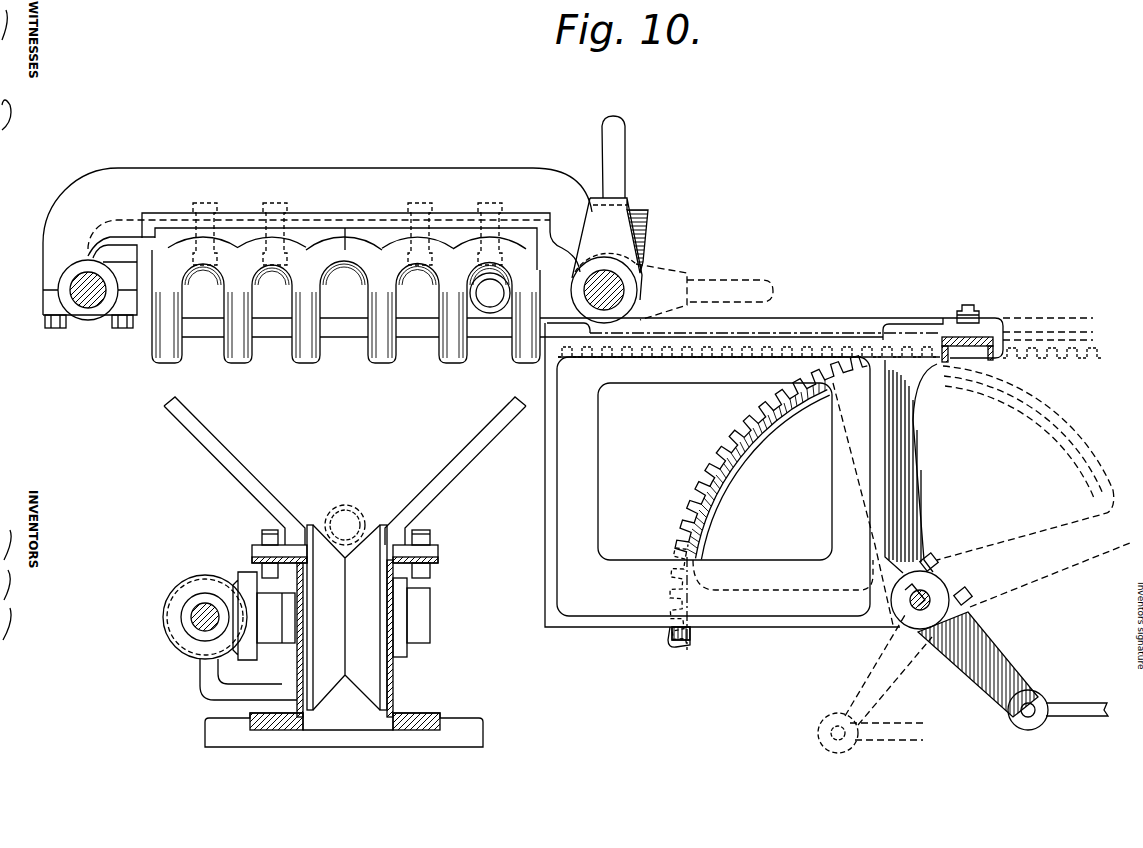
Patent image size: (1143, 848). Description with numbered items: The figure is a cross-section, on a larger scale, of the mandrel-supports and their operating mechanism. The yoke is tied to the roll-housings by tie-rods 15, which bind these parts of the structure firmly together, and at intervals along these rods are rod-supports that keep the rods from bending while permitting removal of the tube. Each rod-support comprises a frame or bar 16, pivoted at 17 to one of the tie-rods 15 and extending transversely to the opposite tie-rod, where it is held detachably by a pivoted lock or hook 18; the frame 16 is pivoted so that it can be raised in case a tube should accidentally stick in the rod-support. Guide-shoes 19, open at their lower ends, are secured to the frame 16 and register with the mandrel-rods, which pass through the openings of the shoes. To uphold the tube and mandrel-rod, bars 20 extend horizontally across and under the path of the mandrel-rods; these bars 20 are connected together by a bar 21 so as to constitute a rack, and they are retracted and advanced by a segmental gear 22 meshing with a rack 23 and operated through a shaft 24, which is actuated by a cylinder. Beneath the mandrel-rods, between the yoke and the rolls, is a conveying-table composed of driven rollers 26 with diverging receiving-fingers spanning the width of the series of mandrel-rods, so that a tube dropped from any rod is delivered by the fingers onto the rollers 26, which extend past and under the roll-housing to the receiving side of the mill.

The tie-rod 15 is at (85, 307).
The frame or bar 16 is at (317, 241).
The pivot 17 is at (79, 282).
The pivoted lock or hook 18 is at (607, 223).
The guide-shoes 19 is at (300, 315).
The bars 20 is at (357, 343).
The bar 21 is at (975, 340).
The segmental gear 22 is at (706, 483).
The rack 23 is at (763, 358).
The shaft 24 is at (930, 595).
The driven rollers 26 is at (368, 586).